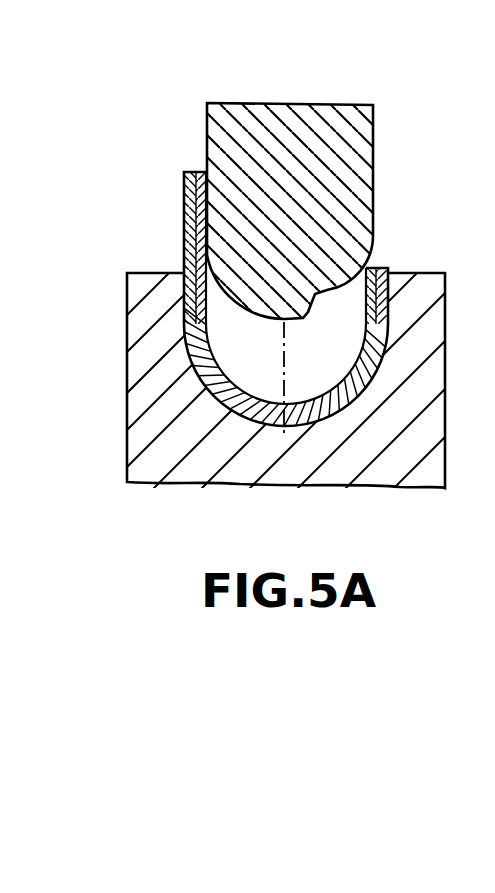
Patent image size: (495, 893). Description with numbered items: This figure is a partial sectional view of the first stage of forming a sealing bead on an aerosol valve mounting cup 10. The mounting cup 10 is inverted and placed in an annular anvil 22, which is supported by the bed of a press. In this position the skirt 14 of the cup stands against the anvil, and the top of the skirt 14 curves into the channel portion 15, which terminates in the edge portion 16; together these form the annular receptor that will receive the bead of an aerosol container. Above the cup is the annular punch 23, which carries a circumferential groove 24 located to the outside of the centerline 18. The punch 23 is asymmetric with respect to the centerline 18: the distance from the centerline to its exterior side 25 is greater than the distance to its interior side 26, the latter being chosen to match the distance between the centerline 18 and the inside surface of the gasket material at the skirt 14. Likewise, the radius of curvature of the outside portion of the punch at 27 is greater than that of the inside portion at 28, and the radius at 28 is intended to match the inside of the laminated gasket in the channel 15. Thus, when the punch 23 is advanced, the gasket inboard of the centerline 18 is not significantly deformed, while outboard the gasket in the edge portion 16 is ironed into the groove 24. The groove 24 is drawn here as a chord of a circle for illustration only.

The mounting cup 10 is at (188, 400).
The skirt 14 is at (183, 243).
The channel portion 15 is at (335, 416).
The edge portion 16 is at (403, 311).
The centerline 18 is at (282, 430).
The annular anvil 22 is at (128, 366).
The annular punch 23 is at (318, 100).
The circumferential groove 24 is at (327, 290).
The exterior side 25 is at (388, 147).
The interior side 26 is at (207, 121).
The outside portion of the punch 27 is at (386, 259).
The inside portion of the punch 28 is at (250, 308).